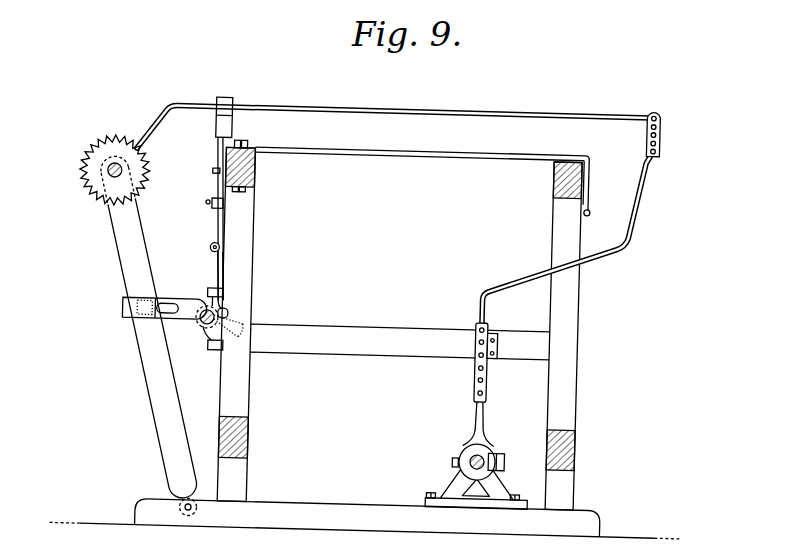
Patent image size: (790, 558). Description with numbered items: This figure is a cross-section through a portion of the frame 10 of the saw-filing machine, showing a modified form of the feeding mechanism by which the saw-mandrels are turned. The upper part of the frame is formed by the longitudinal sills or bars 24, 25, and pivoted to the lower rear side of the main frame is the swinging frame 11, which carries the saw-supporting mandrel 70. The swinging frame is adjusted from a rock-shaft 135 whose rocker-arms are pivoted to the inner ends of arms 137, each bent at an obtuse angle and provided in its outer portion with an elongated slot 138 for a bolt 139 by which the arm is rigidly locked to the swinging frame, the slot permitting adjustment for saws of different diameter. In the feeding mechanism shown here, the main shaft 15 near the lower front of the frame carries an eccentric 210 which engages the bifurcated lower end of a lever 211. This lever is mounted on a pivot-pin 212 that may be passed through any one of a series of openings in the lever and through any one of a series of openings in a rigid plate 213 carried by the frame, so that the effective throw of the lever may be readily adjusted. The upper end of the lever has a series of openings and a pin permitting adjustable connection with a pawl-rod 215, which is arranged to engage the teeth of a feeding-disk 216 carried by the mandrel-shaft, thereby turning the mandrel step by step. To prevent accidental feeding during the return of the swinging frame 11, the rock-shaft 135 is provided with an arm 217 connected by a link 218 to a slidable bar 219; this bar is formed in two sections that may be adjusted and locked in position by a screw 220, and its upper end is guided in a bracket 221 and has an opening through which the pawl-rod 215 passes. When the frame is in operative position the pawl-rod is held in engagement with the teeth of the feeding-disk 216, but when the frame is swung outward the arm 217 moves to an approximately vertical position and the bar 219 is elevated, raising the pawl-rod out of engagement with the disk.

The frame 10 is at (239, 488).
The swinging frame 11 is at (158, 401).
The shaft 15 is at (494, 451).
The longitudinal sill 24 is at (253, 179).
The longitudinal sill 25 is at (552, 184).
The saw-supporting mandrel 70 is at (106, 181).
The rock-shaft 135 is at (207, 332).
The arm 137 is at (179, 296).
The elongated slot 138 is at (200, 320).
The bolt 139 is at (135, 327).
The eccentric 210 is at (462, 450).
The lever 211 is at (483, 430).
The pivot-pin 212 is at (478, 326).
The rigid plate 213 is at (498, 340).
The pawl-rod 215 is at (538, 111).
The feeding-disk 216 is at (105, 153).
The arm 217 is at (227, 316).
The link 218 is at (214, 268).
The slidable bar 219 is at (213, 177).
The screw 220 is at (204, 207).
The bracket 221 is at (222, 132).